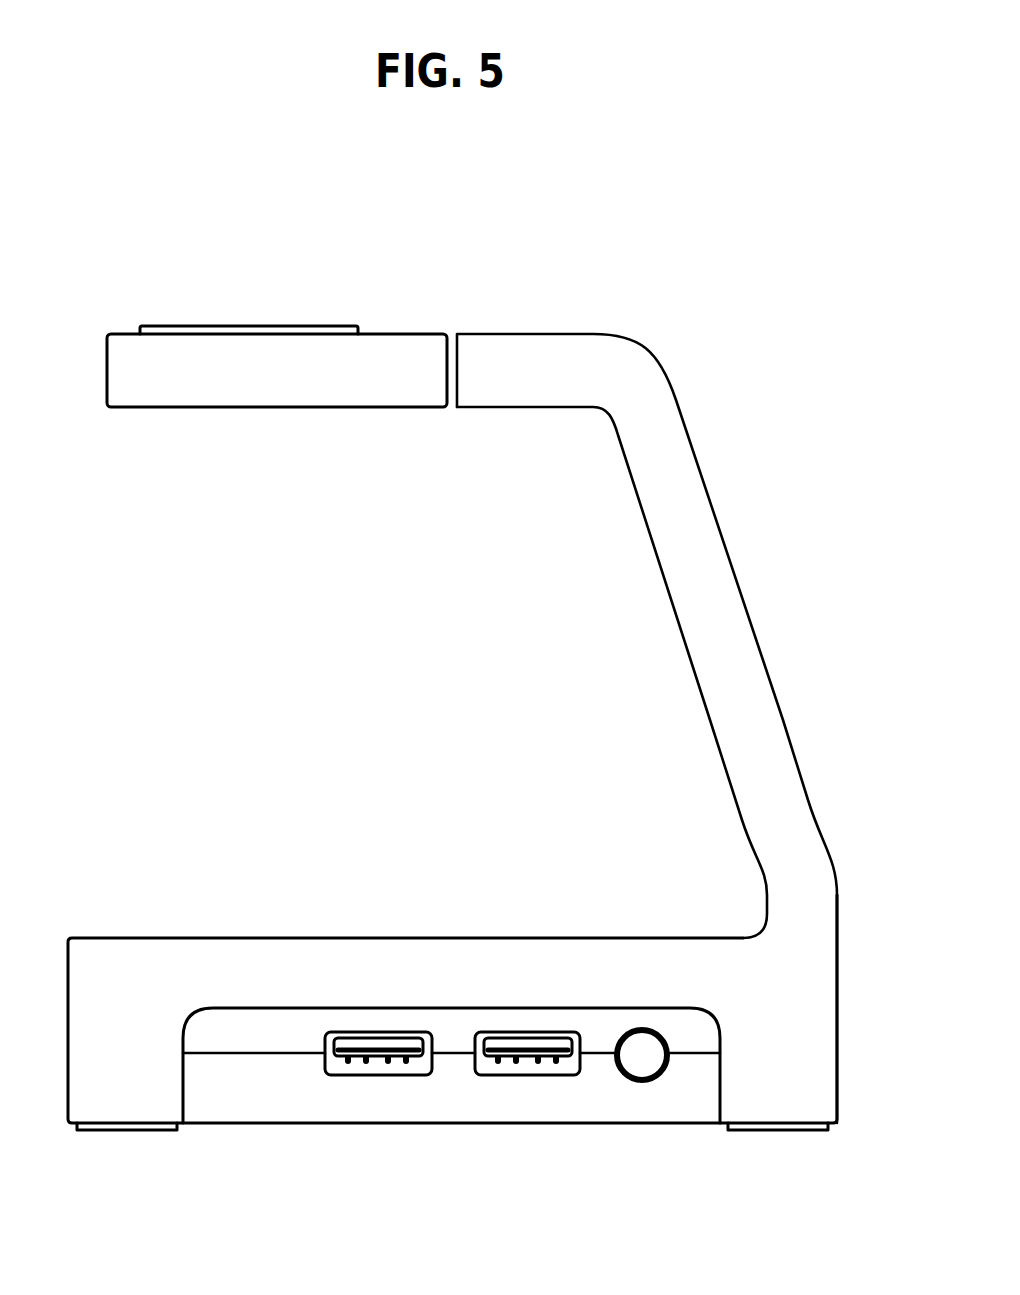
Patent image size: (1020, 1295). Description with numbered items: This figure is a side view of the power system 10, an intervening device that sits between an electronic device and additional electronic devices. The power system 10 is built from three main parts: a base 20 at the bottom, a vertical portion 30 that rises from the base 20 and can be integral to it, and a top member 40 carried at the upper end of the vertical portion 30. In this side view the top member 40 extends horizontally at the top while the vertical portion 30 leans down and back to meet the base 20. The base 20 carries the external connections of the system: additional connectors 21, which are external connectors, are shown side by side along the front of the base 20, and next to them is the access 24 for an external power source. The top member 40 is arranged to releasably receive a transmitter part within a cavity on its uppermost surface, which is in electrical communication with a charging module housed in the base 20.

The power system 10 is at (672, 317).
The base 20 is at (838, 1038).
The additional connectors 21 is at (390, 1075).
The access 24 is at (647, 1083).
The vertical portion 30 is at (750, 618).
The top member 40 is at (107, 371).